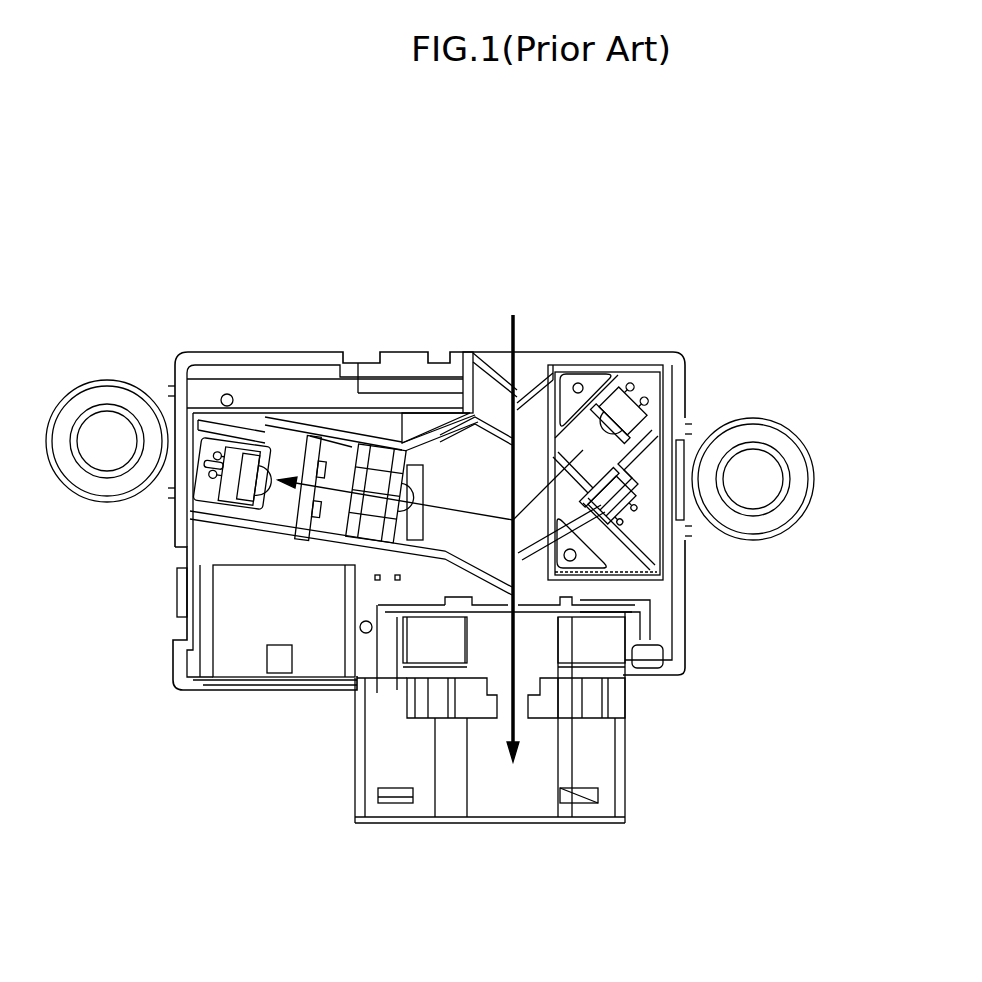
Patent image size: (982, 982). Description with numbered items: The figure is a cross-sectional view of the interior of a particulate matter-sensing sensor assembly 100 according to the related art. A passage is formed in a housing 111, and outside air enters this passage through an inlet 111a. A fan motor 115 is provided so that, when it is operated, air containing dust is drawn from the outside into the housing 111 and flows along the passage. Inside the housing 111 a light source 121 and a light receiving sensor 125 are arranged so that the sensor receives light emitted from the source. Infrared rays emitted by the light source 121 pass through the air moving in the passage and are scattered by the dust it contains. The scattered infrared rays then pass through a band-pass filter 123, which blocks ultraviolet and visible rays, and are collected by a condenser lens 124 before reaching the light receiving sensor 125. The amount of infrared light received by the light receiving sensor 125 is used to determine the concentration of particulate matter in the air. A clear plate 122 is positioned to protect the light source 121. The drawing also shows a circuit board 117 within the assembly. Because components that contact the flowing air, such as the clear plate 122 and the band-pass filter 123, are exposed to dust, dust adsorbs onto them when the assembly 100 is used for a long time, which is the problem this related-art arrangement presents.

The particulate matter-sensing sensor assembly 100 is at (638, 200).
The housing 111 is at (650, 355).
The inlet 111a is at (389, 352).
The fan motor 115 is at (607, 763).
The circuit board 117 is at (243, 650).
The light source 121 is at (627, 422).
The clear plate 122 is at (595, 485).
The band-pass filter 123 is at (417, 467).
The condenser lens 124 is at (378, 467).
The light receiving sensor 125 is at (243, 483).